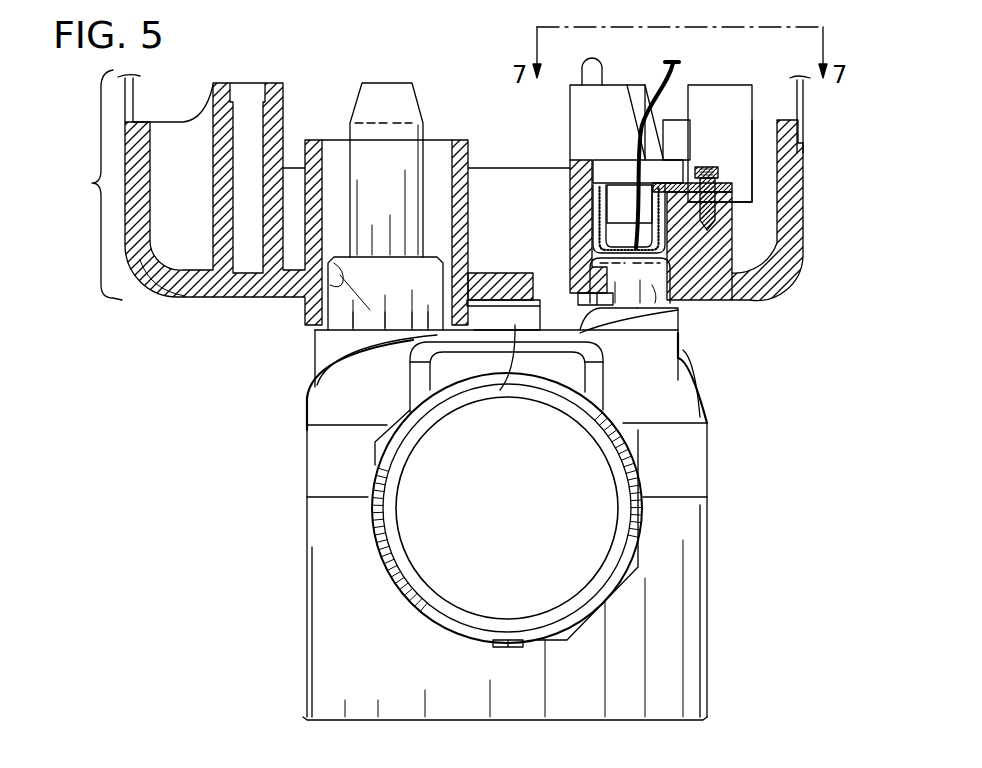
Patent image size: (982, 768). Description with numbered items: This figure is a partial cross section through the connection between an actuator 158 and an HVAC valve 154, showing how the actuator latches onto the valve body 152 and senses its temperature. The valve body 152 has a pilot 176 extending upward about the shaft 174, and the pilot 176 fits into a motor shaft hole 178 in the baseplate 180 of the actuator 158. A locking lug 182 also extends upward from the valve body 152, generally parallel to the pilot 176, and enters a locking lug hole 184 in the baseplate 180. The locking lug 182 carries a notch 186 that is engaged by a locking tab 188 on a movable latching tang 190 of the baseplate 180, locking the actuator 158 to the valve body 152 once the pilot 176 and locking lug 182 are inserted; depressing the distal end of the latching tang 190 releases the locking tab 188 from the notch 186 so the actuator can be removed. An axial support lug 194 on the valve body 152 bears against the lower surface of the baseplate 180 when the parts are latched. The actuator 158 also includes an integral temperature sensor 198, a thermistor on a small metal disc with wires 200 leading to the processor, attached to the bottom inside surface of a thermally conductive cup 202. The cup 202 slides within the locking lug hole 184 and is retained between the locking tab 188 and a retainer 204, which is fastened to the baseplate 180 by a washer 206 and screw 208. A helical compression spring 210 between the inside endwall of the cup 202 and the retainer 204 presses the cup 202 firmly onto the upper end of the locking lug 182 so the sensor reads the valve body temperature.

The valve body 152 is at (315, 463).
The HVAC valve 154 is at (315, 662).
The actuator 158 is at (92, 183).
The shaft 174 is at (391, 92).
The pilot 176 is at (330, 330).
The motor shaft hole 178 is at (332, 262).
The baseplate 180 is at (180, 293).
The locking lug 182 is at (678, 318).
The locking lug hole 184 is at (668, 290).
The notch 186 is at (678, 337).
The locking tab 188 is at (600, 250).
The latching tang 190 is at (595, 185).
The axial support lug 194 is at (407, 413).
The temperature sensor 198 is at (668, 253).
The wires 200 is at (678, 68).
The cup 202 is at (597, 222).
The retainer 204 is at (732, 188).
The washer 206 is at (725, 182).
The screw 208 is at (718, 163).
The helical compression spring 210 is at (690, 227).